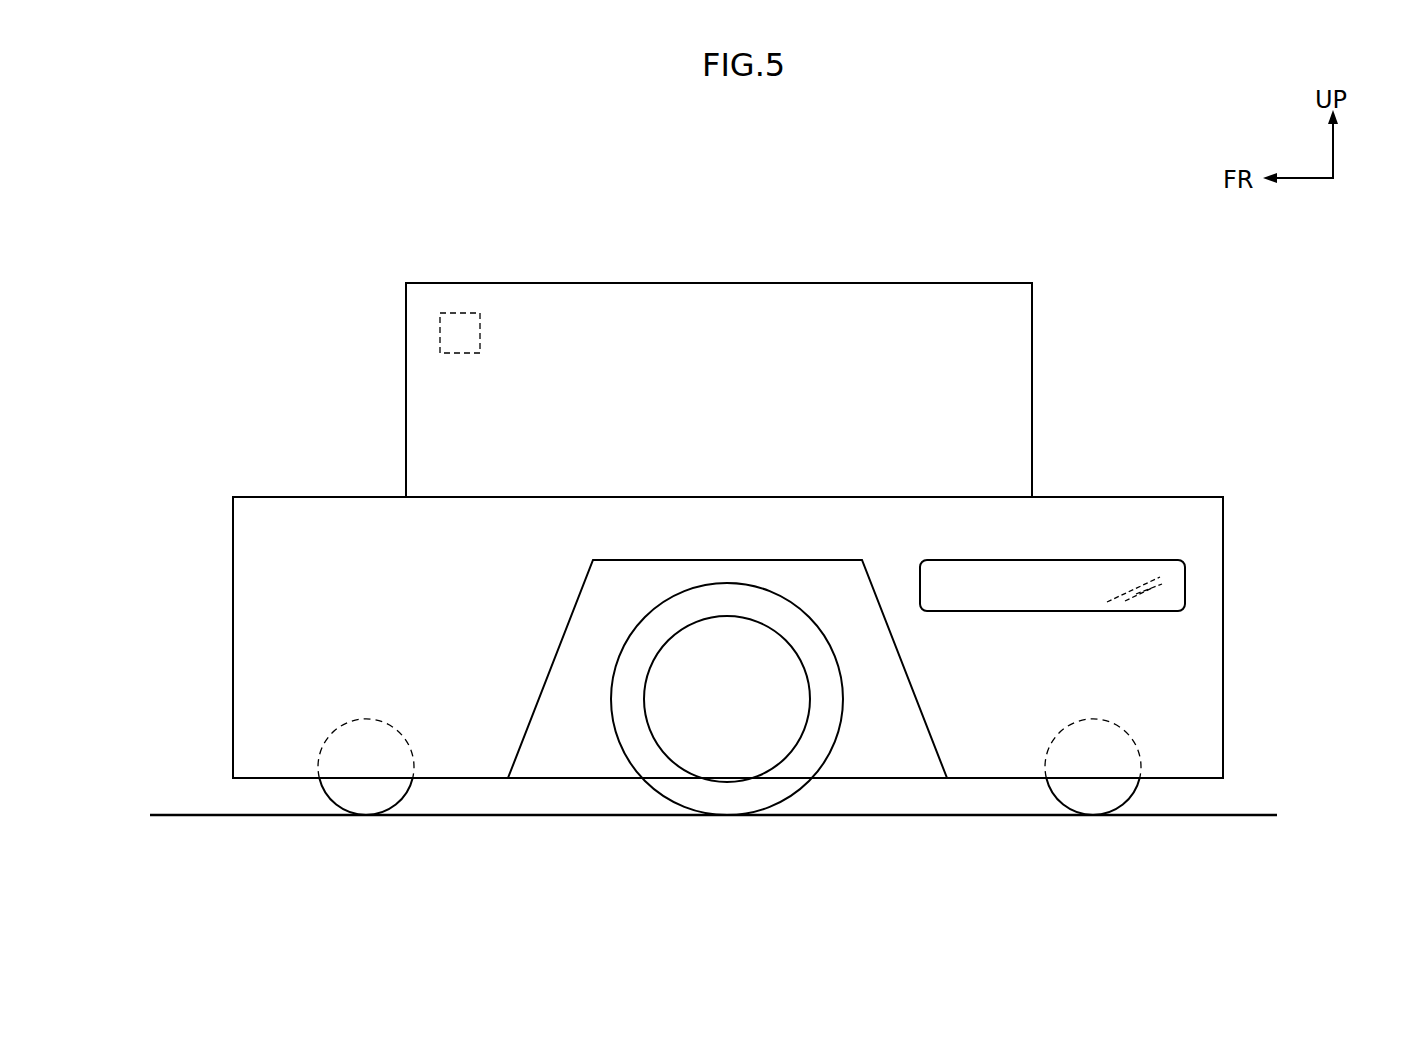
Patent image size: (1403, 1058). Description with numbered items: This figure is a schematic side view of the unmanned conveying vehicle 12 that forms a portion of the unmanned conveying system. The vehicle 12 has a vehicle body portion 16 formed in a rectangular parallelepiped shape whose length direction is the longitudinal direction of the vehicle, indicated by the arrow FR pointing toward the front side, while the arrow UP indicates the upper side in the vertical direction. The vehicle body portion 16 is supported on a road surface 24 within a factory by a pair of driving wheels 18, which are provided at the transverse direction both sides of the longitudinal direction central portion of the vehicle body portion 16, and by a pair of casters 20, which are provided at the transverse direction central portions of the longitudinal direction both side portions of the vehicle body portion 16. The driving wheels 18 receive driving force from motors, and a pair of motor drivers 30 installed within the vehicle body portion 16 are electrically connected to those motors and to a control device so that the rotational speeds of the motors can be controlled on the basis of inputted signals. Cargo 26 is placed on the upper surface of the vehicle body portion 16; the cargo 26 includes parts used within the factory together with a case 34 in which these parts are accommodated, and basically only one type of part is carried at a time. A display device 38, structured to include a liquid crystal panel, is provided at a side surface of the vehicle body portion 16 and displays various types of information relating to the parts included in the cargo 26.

The unmanned conveying vehicle 12 is at (791, 648).
The vehicle body portion 16 is at (1207, 526).
The driving wheels 18 is at (818, 735).
The casters 20 is at (385, 790).
The road surface 24 is at (1258, 812).
The cargo 26 is at (1086, 298).
The motor drivers 30 is at (454, 313).
The case 34 is at (993, 388).
The display device 38 is at (1163, 592).